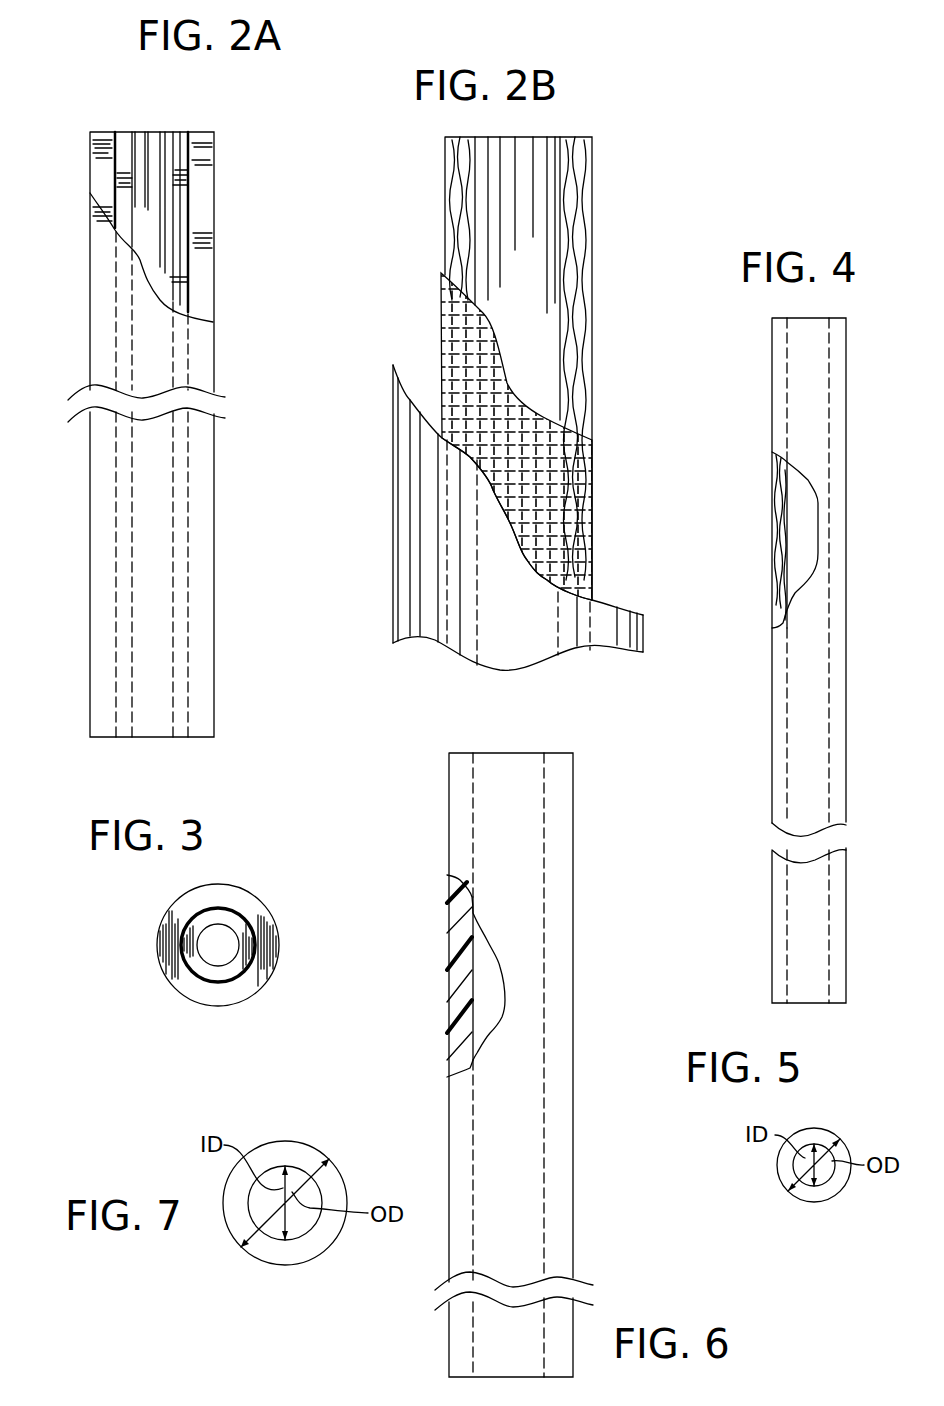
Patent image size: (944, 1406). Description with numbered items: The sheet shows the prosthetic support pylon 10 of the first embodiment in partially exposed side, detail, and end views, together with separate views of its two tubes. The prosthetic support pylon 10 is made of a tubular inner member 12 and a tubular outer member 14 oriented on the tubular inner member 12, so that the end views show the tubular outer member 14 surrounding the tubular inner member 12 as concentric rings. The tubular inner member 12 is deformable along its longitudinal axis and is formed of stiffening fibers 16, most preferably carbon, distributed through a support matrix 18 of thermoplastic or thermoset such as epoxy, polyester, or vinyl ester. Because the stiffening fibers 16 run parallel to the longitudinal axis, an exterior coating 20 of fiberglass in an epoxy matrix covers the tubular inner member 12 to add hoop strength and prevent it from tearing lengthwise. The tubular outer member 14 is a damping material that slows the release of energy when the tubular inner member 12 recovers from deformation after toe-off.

In FIG. 2A, the prosthetic support pylon 10 is at (171, 394).
In FIG. 2B, the prosthetic support pylon 10 is at (512, 384).
In FIG. 2A, the tubular inner member 12 is at (180, 133).
In FIG. 2B, the tubular inner member 12 is at (445, 205).
In FIG. 4, the tubular inner member 12 is at (772, 365).
In FIG. 3, the tubular inner member 12 is at (200, 980).
In FIG. 2A, the tubular outer member 14 is at (210, 136).
In FIG. 2B, the tubular outer member 14 is at (395, 438).
In FIG. 3, the tubular outer member 14 is at (160, 925).
In FIG. 6, the tubular outer member 14 is at (449, 818).
In FIG. 2B, the stiffening fibers 16 is at (580, 194).
In FIG. 4, the stiffening fibers 16 is at (780, 492).
In FIG. 4, the support matrix 18 is at (780, 556).
In FIG. 2A, the exterior coating 20 is at (190, 167).
In FIG. 2B, the exterior coating 20 is at (441, 290).
In FIG. 4, the exterior coating 20 is at (772, 422).